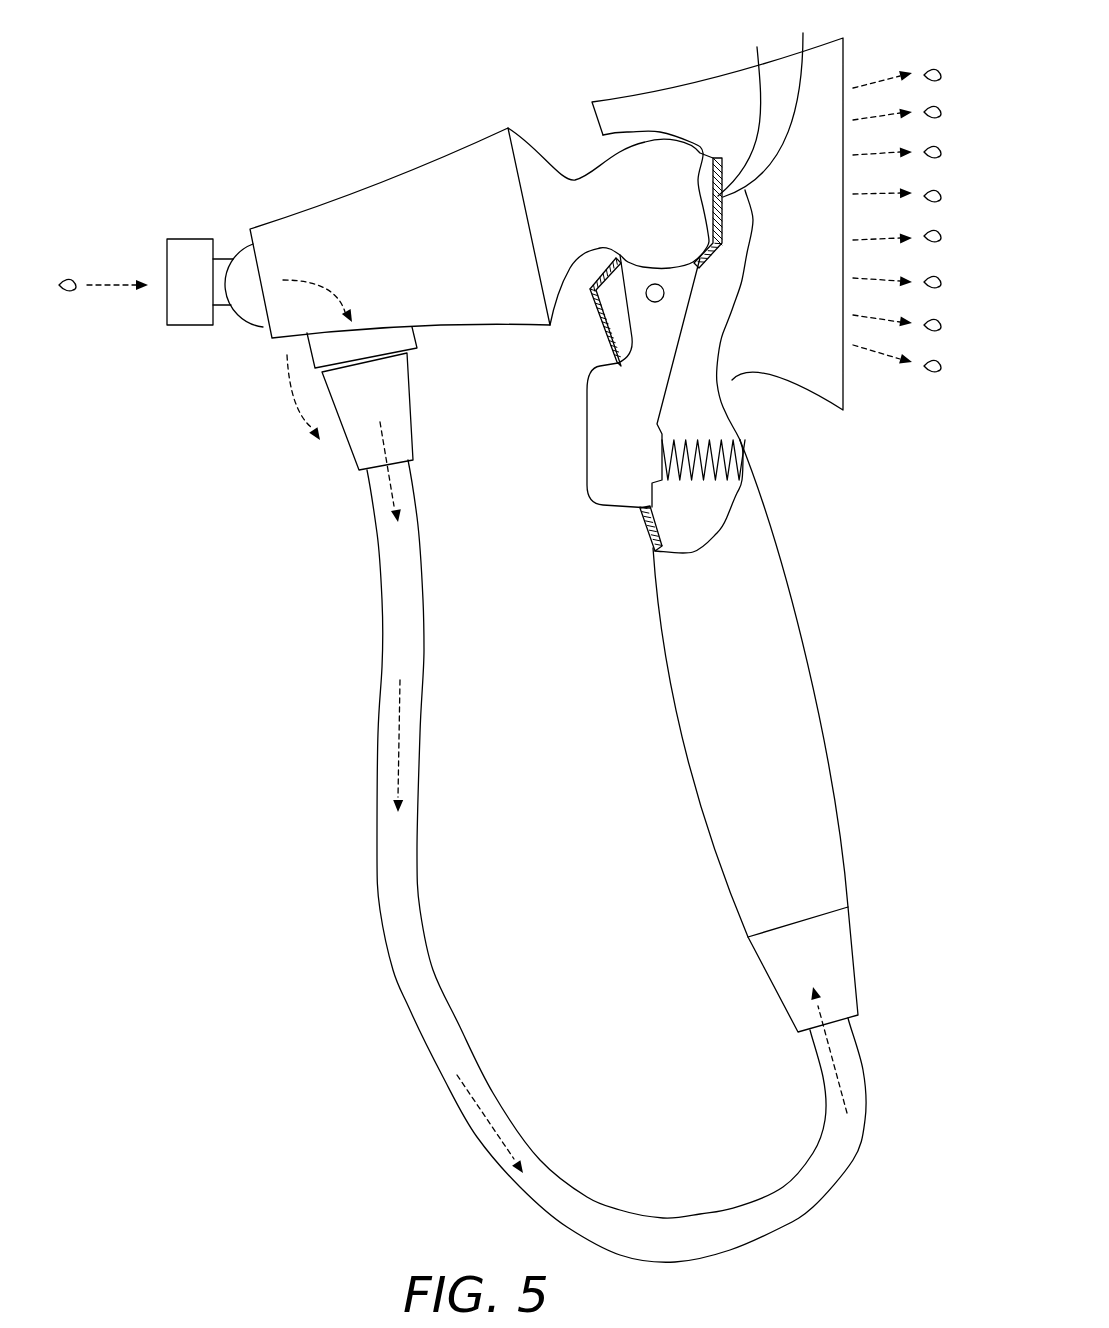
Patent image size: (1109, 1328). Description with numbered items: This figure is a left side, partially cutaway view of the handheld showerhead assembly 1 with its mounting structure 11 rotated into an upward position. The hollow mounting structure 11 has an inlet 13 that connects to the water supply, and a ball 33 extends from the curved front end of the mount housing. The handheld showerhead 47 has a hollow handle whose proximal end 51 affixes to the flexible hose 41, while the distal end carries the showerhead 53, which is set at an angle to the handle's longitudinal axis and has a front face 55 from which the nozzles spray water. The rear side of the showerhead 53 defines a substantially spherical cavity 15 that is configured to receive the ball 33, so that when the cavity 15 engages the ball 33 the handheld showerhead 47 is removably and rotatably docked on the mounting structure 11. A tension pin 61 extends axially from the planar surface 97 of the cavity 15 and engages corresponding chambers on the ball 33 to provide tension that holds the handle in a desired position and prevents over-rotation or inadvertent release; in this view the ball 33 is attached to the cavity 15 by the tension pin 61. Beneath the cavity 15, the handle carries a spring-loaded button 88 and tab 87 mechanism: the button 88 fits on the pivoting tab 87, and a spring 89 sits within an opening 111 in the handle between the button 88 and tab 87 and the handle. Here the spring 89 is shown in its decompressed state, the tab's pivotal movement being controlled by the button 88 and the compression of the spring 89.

The showerhead assembly 1 is at (162, 590).
The mounting structure 11 is at (367, 207).
The inlet 13 is at (188, 247).
The substantially spherical cavity 15 is at (703, 163).
The ball 33 is at (637, 172).
The flexible hose 41 is at (448, 1057).
The handheld showerhead 47 is at (796, 714).
The proximal end 51 is at (826, 947).
The showerhead 53 is at (837, 72).
The front face 55 is at (247, 263).
The tension pin 61 is at (770, 221).
The tab 87 is at (603, 460).
The button 88 is at (610, 310).
The spring 89 is at (727, 452).
The planar surface 97 is at (747, 110).
The opening 111 is at (707, 499).